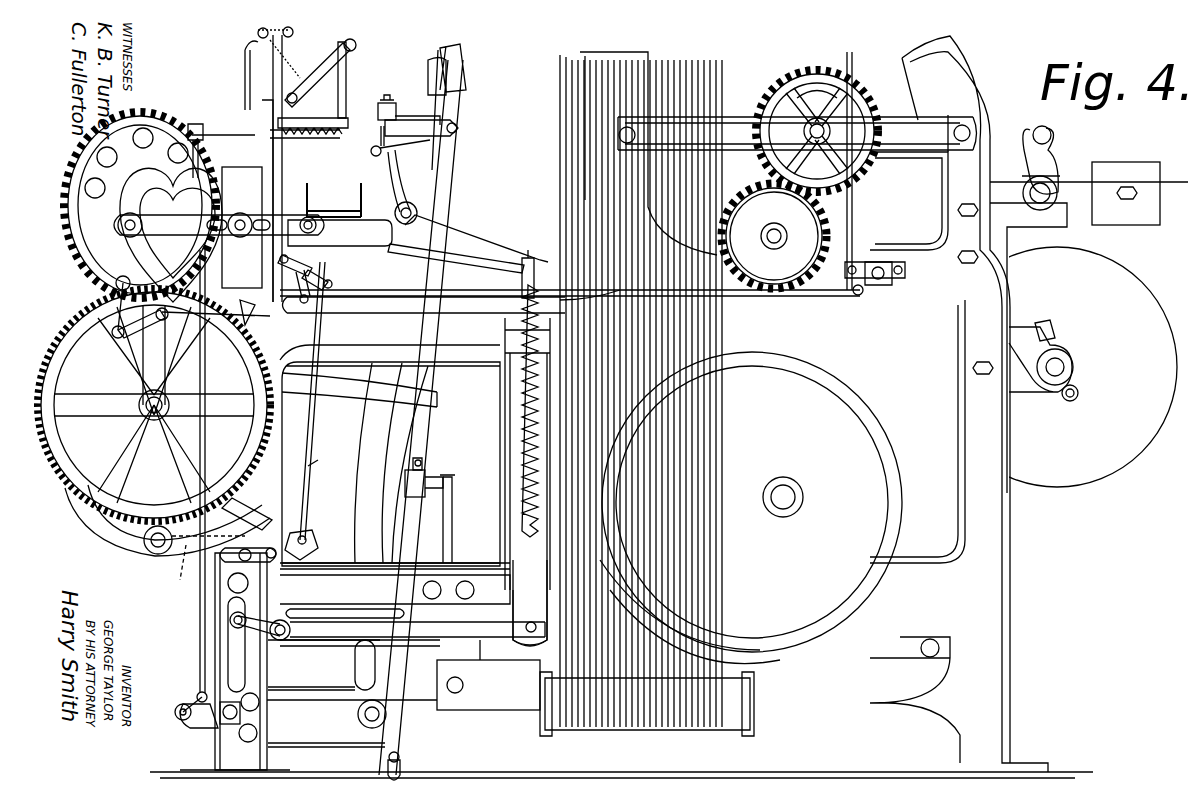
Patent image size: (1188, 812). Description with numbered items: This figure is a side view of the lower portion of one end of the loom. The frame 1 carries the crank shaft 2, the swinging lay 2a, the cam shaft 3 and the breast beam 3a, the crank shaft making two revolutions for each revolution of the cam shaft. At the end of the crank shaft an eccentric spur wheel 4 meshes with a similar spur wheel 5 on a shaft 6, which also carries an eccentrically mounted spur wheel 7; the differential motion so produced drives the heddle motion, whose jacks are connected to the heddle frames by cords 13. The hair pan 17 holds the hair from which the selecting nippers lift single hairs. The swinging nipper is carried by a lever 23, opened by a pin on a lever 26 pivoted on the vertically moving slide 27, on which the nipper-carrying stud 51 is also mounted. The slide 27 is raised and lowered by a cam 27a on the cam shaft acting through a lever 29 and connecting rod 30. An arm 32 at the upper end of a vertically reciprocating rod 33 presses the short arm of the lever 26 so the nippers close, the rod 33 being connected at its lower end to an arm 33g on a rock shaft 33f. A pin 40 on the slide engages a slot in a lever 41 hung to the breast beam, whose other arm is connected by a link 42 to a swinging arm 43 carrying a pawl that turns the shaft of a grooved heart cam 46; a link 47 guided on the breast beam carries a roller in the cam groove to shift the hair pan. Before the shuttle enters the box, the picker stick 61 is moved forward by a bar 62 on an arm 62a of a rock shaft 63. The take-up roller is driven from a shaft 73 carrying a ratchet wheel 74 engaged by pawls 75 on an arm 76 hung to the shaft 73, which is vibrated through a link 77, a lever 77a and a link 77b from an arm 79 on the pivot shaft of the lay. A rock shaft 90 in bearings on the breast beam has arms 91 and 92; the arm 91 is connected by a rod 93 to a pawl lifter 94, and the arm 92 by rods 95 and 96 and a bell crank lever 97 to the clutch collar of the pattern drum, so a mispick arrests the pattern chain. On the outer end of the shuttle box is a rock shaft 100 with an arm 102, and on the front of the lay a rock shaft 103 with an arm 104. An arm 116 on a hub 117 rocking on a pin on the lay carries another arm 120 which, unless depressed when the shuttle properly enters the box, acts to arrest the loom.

The frame 1 is at (669, 407).
The crank shaft 2 is at (770, 242).
The swinging lay 2a is at (458, 178).
The cam shaft 3 is at (789, 495).
The breast beam 3a is at (247, 201).
The eccentric spur wheel 4 is at (745, 200).
The spur wheel 5 is at (856, 160).
The shaft 6 is at (815, 127).
The eccentrically mounted spur wheel 7 is at (858, 95).
The cords 13 is at (698, 58).
The hair pan 17 is at (336, 195).
The lever 23 is at (347, 83).
The lever 26 is at (320, 73).
The slide 27 is at (282, 297).
The cam 27a is at (751, 508).
The lever 29 is at (417, 629).
The connecting rod 30 is at (305, 411).
The arm 32 is at (214, 135).
The vertically reciprocating rod 33 is at (218, 404).
The rock shaft 33f is at (184, 718).
The arm 33g is at (200, 694).
The pin 40 is at (390, 341).
The lever 41 is at (213, 314).
The link 42 is at (124, 322).
The swinging arm 43 is at (117, 282).
The grooved heart cam 46 is at (143, 207).
The link 47 is at (232, 218).
The nipper-carrying stud 51 is at (309, 120).
The picker stick 61 is at (425, 436).
The bar 62 is at (478, 260).
The arm 62a is at (520, 284).
The rock shaft 63 is at (505, 326).
The shaft 73 is at (142, 405).
The ratchet wheel 74 is at (62, 316).
The pawls 75 is at (86, 556).
The arm 76 is at (154, 405).
The link 77 is at (174, 567).
The lever 77a is at (266, 604).
The link 77b is at (336, 616).
The arm 79 is at (356, 667).
The rock shaft 90 is at (300, 260).
The arm 91 is at (325, 276).
The arm 92 is at (296, 286).
The rod 93 is at (324, 457).
The pawl lifter 94 is at (248, 555).
The rod 95 is at (570, 285).
The rod 96 is at (850, 209).
The bell crank lever 97 is at (862, 262).
The rock shaft 100 is at (396, 108).
The arm 102 is at (385, 134).
The rock shaft 103 is at (371, 151).
The arm 104 is at (378, 150).
The arm 116 is at (402, 192).
The hub 117 is at (411, 220).
The arm 120 is at (395, 208).